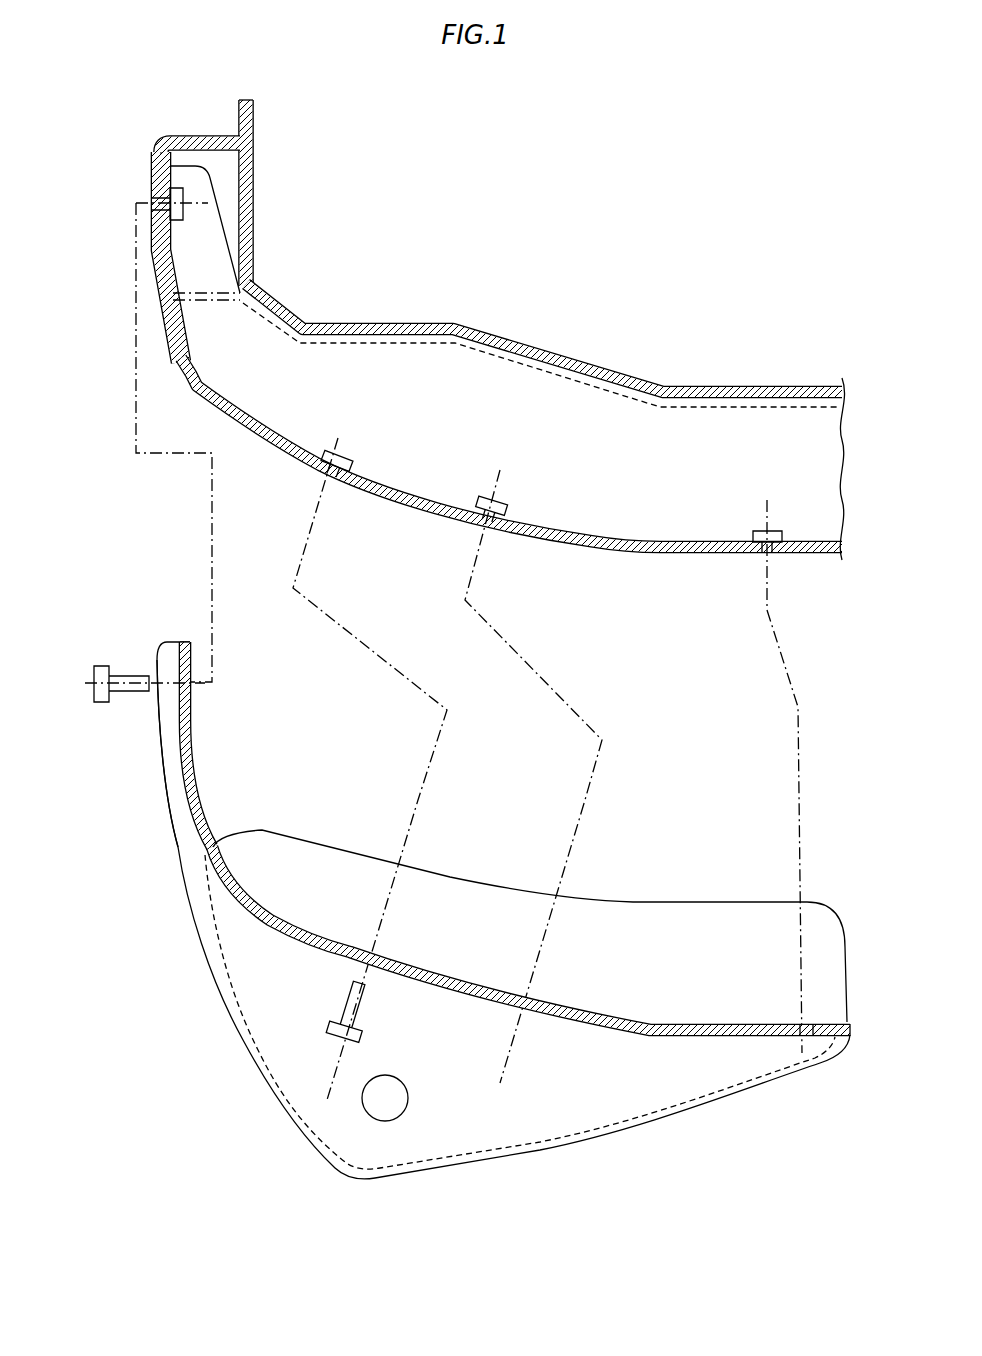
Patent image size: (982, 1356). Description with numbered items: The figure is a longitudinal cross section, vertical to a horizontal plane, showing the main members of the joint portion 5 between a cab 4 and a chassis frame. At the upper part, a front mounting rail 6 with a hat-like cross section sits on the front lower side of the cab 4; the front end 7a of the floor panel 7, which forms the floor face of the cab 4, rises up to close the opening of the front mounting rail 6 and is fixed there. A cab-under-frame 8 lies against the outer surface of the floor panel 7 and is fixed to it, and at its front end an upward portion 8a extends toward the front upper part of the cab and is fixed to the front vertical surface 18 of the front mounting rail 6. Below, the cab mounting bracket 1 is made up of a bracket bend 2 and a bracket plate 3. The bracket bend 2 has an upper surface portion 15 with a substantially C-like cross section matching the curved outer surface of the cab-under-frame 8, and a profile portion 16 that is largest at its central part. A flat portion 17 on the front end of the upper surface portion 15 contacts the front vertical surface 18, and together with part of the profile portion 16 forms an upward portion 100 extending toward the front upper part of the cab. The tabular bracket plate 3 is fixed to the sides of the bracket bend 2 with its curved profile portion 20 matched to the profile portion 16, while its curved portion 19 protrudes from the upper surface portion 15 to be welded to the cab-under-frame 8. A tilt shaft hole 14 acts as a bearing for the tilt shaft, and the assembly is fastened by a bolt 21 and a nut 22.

The cab mounting bracket 1 is at (545, 1154).
The bracket bend 2 is at (188, 845).
The bracket plate 3 is at (702, 1073).
The cab 4 is at (470, 187).
The joint portion for a cab and a chassis frame 5 is at (447, 1169).
The front mounting rail 6 is at (204, 136).
The floor panel 7 is at (625, 375).
The front end of the floor panel 7a is at (255, 170).
The cab-under-frame 8 is at (672, 533).
The upward portion of the cab-under-frame 8a is at (162, 242).
The tilt shaft hole 14 is at (364, 1108).
The upper surface portion 15 is at (742, 1024).
The profile portion 16 is at (602, 1135).
The flat portion 17 is at (193, 657).
The front vertical surface 18 is at (160, 262).
The curved portion 19 is at (632, 900).
The curved profile portion 20 is at (663, 1103).
The bolt 21 is at (104, 666).
The nut 22 is at (184, 210).
The upward portion of the cab mount bracket 100 is at (164, 732).